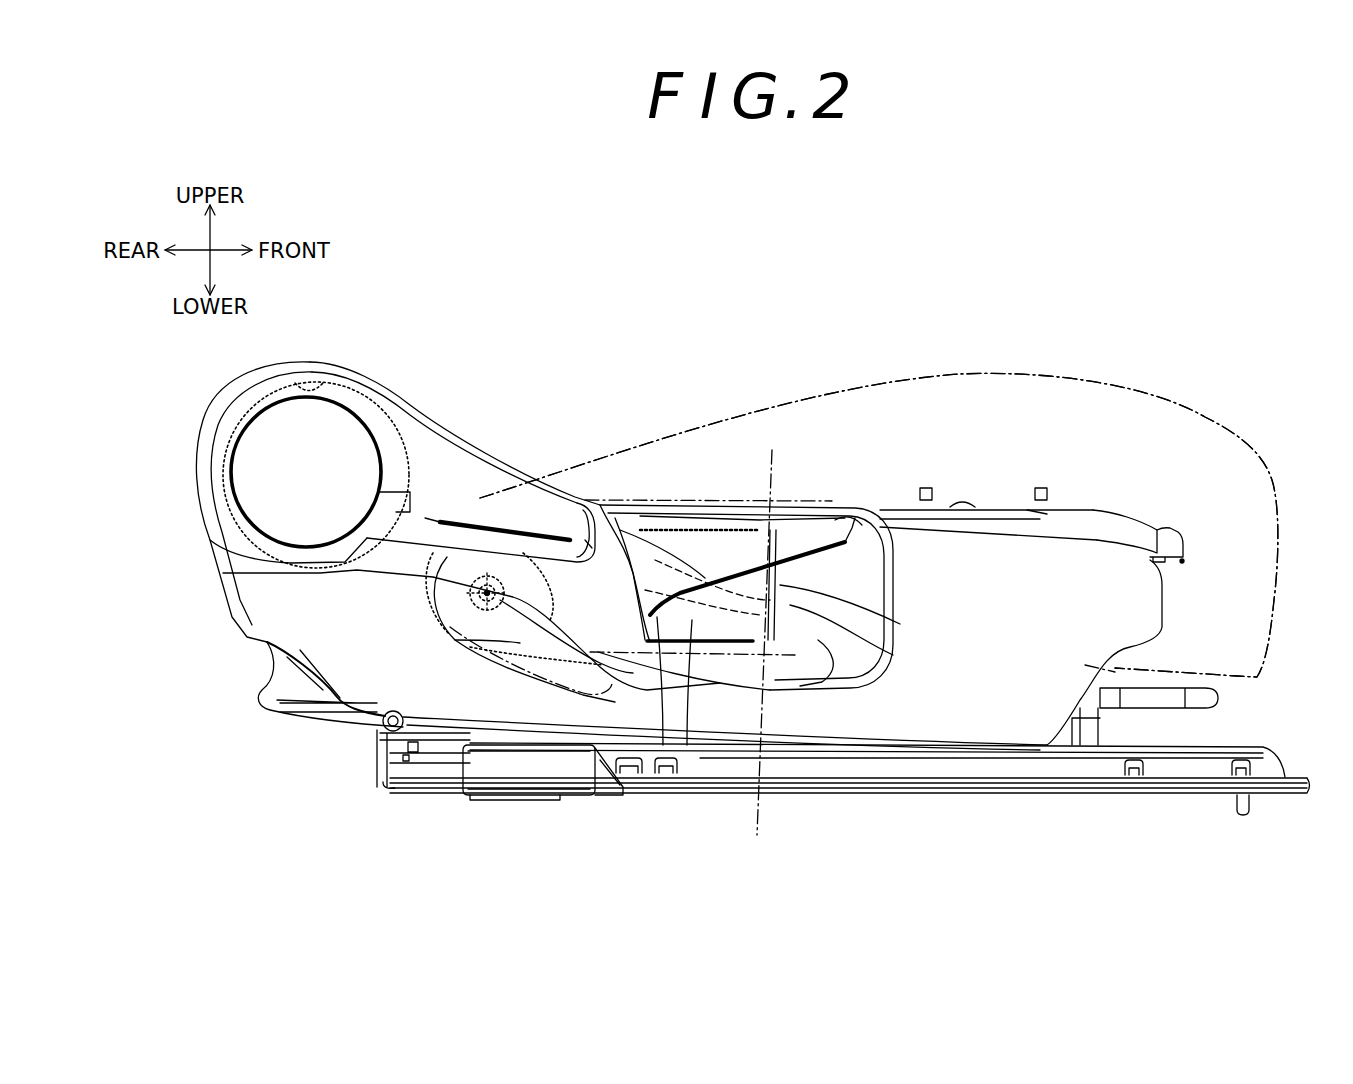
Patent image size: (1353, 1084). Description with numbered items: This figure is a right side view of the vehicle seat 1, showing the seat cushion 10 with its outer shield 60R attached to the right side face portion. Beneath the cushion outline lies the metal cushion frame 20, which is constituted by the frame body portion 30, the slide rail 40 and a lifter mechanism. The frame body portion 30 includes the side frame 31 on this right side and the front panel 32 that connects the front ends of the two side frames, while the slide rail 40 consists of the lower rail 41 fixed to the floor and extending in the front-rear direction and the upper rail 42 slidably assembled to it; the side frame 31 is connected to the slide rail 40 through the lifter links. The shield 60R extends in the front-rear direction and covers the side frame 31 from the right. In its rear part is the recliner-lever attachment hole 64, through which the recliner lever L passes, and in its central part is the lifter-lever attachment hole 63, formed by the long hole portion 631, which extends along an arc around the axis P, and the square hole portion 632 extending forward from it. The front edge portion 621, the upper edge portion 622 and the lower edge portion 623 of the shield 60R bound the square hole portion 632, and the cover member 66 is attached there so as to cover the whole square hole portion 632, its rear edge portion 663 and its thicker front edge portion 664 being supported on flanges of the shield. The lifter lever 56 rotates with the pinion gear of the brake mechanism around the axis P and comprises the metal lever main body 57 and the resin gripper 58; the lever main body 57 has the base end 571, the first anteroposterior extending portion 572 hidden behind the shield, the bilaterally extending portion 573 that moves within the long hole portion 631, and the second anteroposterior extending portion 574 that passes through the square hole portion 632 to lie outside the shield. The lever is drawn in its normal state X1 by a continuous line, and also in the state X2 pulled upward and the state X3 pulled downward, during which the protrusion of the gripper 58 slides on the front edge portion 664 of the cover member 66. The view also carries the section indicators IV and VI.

The vehicle seat 1 is at (1146, 303).
The seat cushion 10 is at (1089, 337).
The cushion frame 20 is at (1046, 472).
The frame body portion 30 is at (1078, 507).
The side frame 31 is at (1003, 522).
The front panel 32 is at (1152, 535).
The slide rail 40 is at (1296, 757).
The lower rail 41 is at (1175, 767).
The upper rail 42 is at (415, 768).
The lifter lever 56 is at (713, 522).
The lever main body 57 is at (445, 620).
The base end 571 is at (468, 570).
The first anteroposterior extending portion 572 is at (565, 580).
The bilaterally extending portion 573 is at (602, 525).
The second anteroposterior extending portion 574 is at (665, 555).
The gripper 58 is at (735, 545).
The shield 60R is at (1002, 712).
The front edge portion 621 is at (900, 624).
The upper edge portion 622 is at (690, 500).
The lower edge portion 623 is at (668, 775).
The lifter-lever attachment hole 63 is at (704, 700).
The long hole portion 631 is at (593, 745).
The square hole portion 632 is at (736, 650).
The recliner-lever attachment hole 64 is at (324, 383).
The cover member 66 is at (692, 648).
The rear edge portion 663 is at (627, 785).
The front edge portion 664 is at (893, 654).
The recliner lever L is at (430, 482).
The axis P is at (487, 588).
The normal state X1 is at (842, 522).
The pulled-up state X2 is at (818, 503).
The pulled-down state X3 is at (870, 687).
The section IV is at (175, 556).
The section VI is at (783, 468).